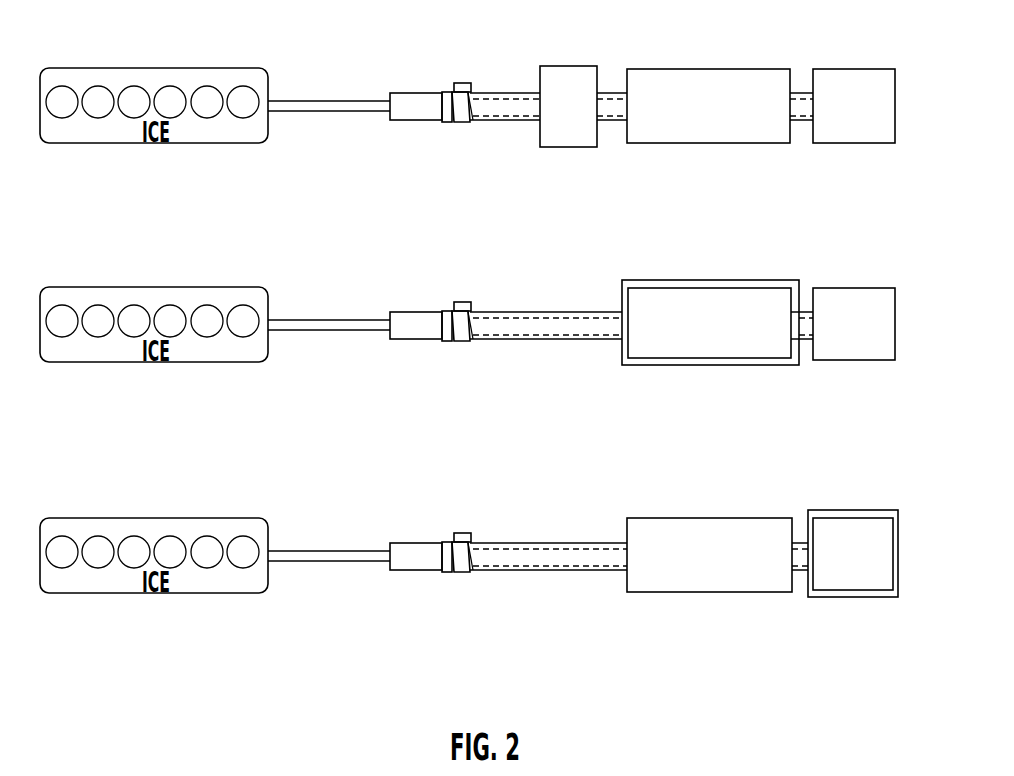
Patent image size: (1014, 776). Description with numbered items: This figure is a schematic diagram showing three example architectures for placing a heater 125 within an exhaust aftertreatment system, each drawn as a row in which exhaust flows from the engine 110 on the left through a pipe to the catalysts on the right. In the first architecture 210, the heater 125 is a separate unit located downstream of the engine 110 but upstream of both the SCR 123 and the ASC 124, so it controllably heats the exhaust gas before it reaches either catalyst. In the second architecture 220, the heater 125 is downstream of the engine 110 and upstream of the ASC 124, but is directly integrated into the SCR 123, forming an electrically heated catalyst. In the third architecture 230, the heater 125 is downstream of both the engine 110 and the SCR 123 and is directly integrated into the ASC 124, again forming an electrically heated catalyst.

The engine 110 is at (140, 67).
The SCR 123 is at (722, 67).
The ASC 124 is at (852, 68).
The heater 125 is at (539, 80).
The first architecture 210 is at (278, 145).
The second architecture 220 is at (280, 370).
The third architecture 230 is at (278, 610).